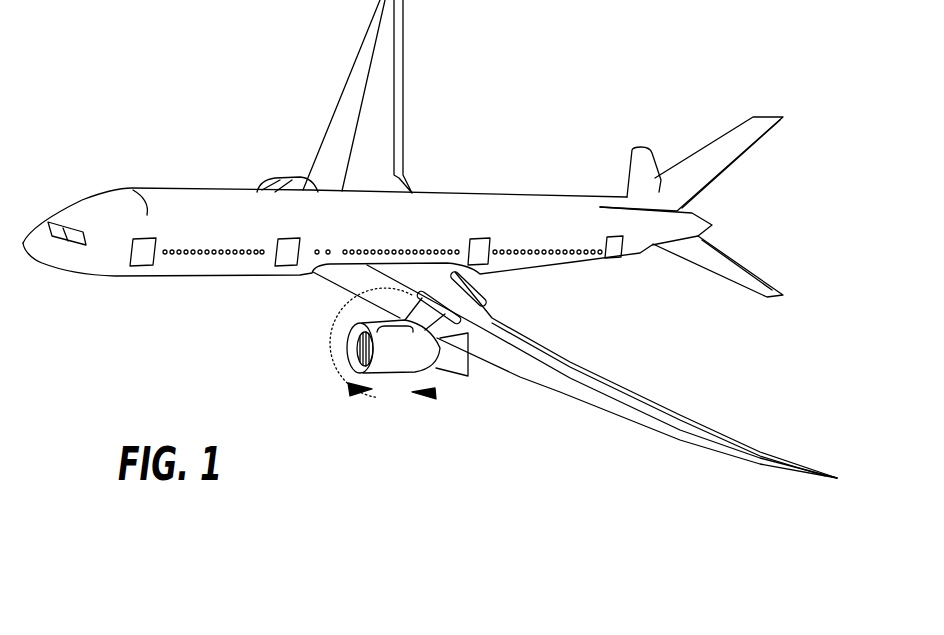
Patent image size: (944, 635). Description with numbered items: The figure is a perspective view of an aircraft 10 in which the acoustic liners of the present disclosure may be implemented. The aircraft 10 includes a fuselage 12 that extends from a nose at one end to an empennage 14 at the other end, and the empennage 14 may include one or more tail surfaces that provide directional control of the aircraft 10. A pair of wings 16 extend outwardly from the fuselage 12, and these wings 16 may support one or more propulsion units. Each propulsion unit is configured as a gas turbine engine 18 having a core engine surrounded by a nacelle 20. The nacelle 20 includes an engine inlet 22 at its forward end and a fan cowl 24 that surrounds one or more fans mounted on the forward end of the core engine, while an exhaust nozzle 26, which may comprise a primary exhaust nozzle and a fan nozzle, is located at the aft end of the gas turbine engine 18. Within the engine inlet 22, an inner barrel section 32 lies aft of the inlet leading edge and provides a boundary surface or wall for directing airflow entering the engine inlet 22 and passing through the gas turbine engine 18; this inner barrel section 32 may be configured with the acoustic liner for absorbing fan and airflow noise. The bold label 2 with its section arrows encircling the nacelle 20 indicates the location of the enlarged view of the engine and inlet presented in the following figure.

The aircraft 10 is at (70, 207).
The fuselage 12 is at (473, 191).
The empennage 14 is at (712, 205).
The wings 16 is at (356, 65).
The gas turbine engine 18 is at (283, 176).
The nacelle 20 is at (407, 369).
The engine inlet 22 is at (346, 358).
The fan cowl 24 is at (385, 374).
The exhaust nozzle 26 is at (445, 353).
The inner barrel section 32 is at (357, 342).
The section line for FIG. 2 is at (383, 351).